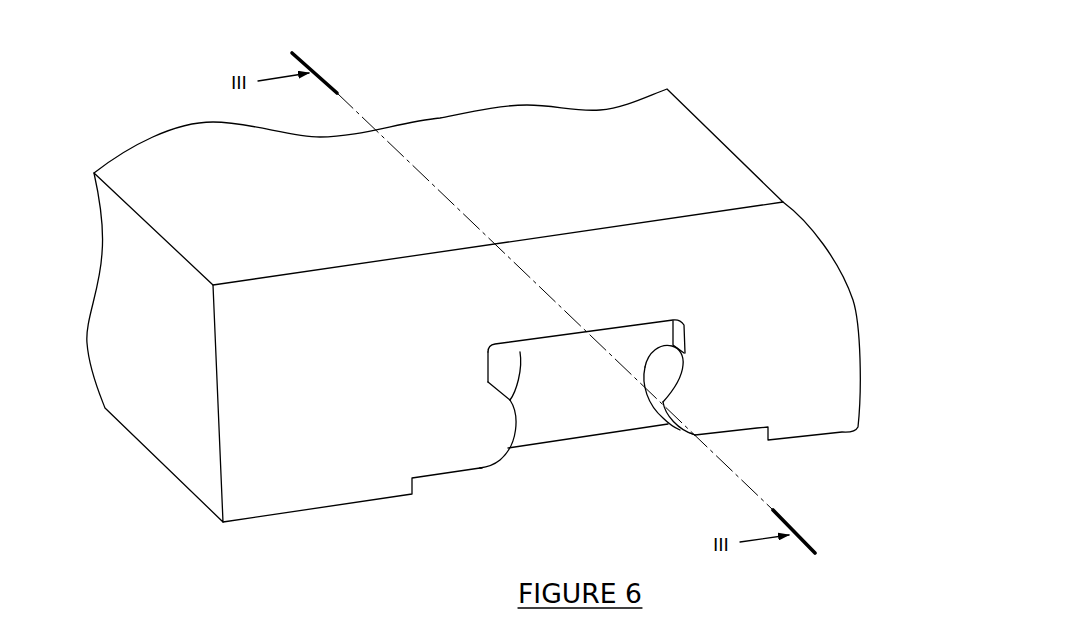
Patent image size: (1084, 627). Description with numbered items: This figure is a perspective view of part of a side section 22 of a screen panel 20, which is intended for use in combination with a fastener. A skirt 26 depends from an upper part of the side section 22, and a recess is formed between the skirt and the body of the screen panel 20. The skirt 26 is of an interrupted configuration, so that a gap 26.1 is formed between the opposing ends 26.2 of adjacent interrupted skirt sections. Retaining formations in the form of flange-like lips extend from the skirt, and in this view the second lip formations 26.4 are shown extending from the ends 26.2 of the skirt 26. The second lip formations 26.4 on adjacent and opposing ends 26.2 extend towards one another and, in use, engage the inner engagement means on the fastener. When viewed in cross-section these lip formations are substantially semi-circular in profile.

The screen panel 20 is at (799, 134).
The side section 22 is at (803, 258).
The skirt 26 is at (488, 433).
The gap 26.1 is at (585, 418).
The ends of skirt sections 26.2 is at (509, 471).
The second lip formation 26.4 is at (520, 352).